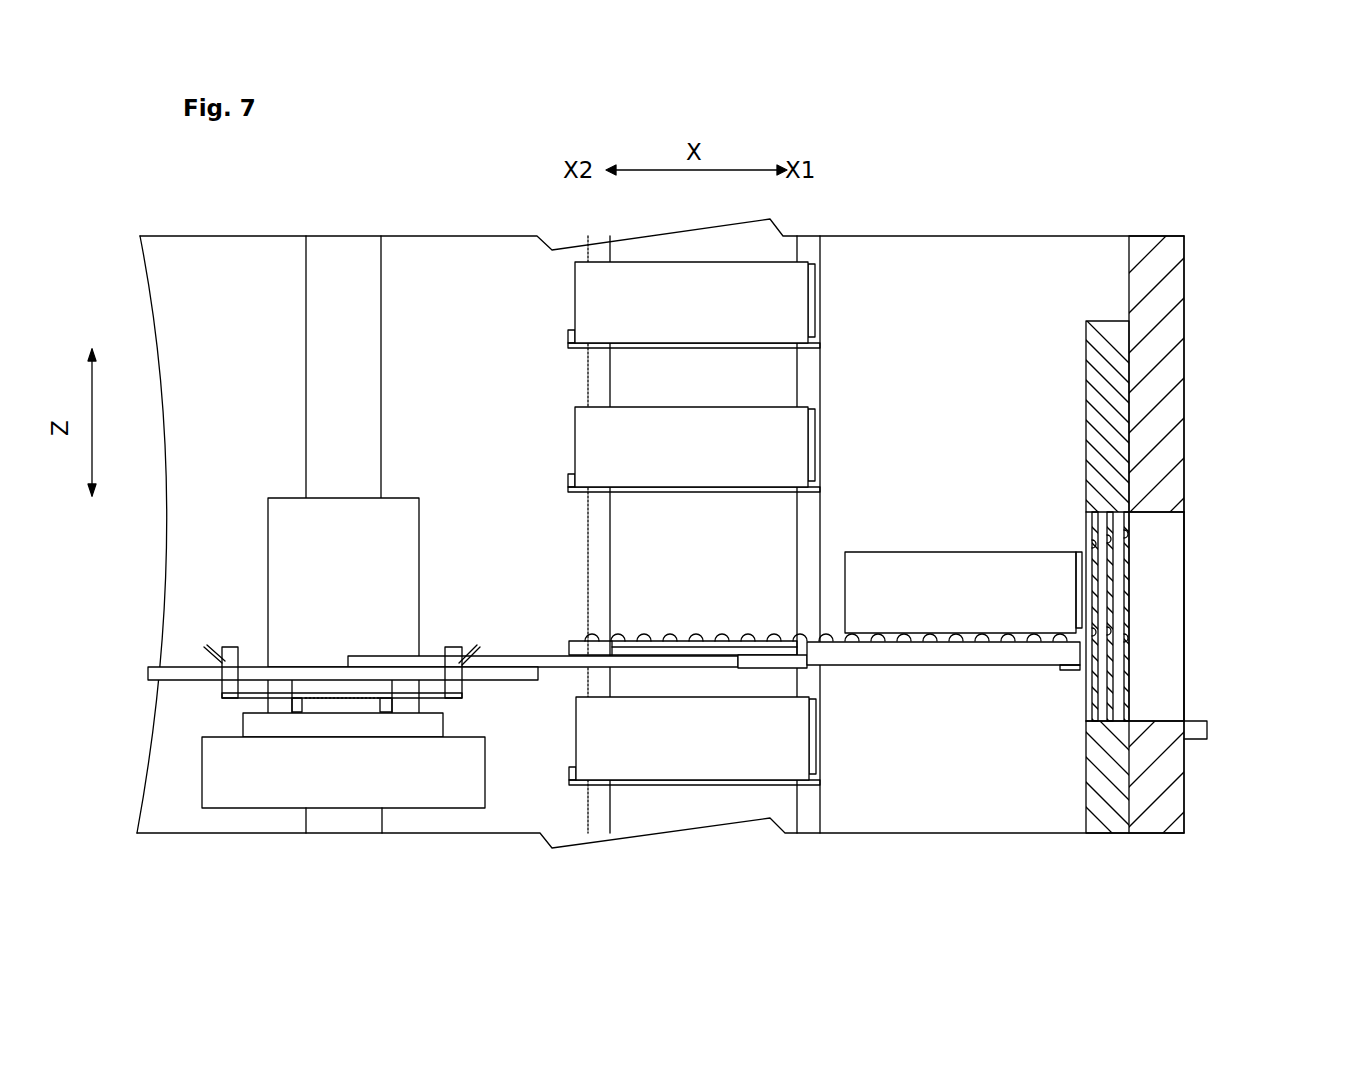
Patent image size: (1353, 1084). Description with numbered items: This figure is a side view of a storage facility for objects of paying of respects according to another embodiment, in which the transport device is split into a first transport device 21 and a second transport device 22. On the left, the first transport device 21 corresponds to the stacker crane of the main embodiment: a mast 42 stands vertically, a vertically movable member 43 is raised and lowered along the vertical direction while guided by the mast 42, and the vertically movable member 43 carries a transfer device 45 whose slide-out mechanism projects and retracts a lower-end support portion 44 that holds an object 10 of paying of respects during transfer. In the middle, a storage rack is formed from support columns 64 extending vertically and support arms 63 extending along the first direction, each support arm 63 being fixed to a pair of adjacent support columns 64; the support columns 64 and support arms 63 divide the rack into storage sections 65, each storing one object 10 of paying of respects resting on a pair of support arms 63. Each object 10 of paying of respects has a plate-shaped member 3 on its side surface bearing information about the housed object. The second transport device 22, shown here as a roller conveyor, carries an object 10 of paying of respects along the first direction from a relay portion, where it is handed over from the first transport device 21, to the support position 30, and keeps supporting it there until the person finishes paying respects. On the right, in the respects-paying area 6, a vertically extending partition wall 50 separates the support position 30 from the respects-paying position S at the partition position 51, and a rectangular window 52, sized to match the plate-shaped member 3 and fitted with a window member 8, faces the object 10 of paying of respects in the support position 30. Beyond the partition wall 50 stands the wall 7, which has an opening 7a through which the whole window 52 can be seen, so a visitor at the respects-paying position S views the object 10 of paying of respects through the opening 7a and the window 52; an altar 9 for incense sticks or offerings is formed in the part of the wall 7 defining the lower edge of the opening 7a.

The plate-shaped member 3 is at (1072, 523).
The respects-paying area 6 is at (1273, 493).
The wall 7 is at (1142, 243).
The opening 7a is at (1160, 518).
The window member 8 is at (1130, 628).
The altar 9 is at (1207, 730).
The object of paying of respects 10 is at (688, 425).
The first transport device 21 is at (248, 517).
The second transport device 22 is at (843, 656).
The support position 30 is at (862, 597).
The mast 42 is at (318, 343).
The vertically movable member 43 is at (218, 768).
The lower-end support portion 44 is at (760, 652).
The transfer device 45 is at (658, 675).
The partition wall 50 is at (1108, 322).
The partition position 51 is at (1105, 836).
The window 52 is at (1133, 602).
The support arm 63 is at (670, 778).
The support column 64 is at (600, 612).
The storage section 65 is at (780, 307).
The respects-paying position S is at (1283, 678).